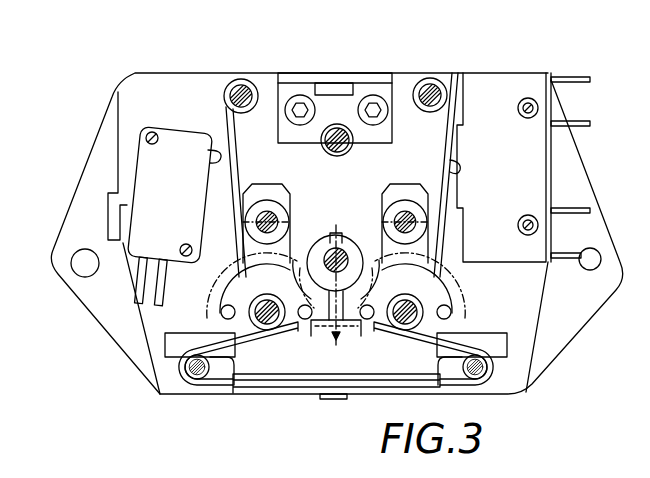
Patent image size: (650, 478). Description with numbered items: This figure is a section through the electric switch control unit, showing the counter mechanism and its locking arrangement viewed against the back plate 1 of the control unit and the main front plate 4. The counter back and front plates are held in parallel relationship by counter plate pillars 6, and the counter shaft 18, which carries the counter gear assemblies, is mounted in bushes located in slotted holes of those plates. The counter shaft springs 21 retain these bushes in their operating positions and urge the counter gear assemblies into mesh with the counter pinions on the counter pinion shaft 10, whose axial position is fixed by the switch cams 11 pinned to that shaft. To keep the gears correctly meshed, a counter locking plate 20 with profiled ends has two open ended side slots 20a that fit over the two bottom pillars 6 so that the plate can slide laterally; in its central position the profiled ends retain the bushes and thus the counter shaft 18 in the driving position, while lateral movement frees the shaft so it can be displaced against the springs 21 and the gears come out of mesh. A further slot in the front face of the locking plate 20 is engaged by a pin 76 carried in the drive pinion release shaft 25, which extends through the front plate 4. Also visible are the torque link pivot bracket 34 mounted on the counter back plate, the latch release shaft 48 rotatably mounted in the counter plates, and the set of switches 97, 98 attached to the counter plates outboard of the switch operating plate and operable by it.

The back plate of the control unit 1 is at (578, 190).
The main front plate 4 is at (521, 308).
The counter plate pillars 6 is at (200, 382).
The counter pinion shaft 10 is at (262, 221).
The switch cams 11 is at (261, 192).
The counter shaft 18 is at (250, 305).
The counter locking plate 20 is at (270, 375).
The open ended side slots 20a is at (175, 343).
The counter shaft springs 21 is at (158, 397).
The drive pinion release shaft 25 is at (331, 248).
The torque link pivot bracket 34 is at (340, 78).
The latch release shaft 48 is at (348, 152).
The pin 76 is at (333, 338).
The switch 97 is at (178, 148).
The switch 98 is at (494, 108).